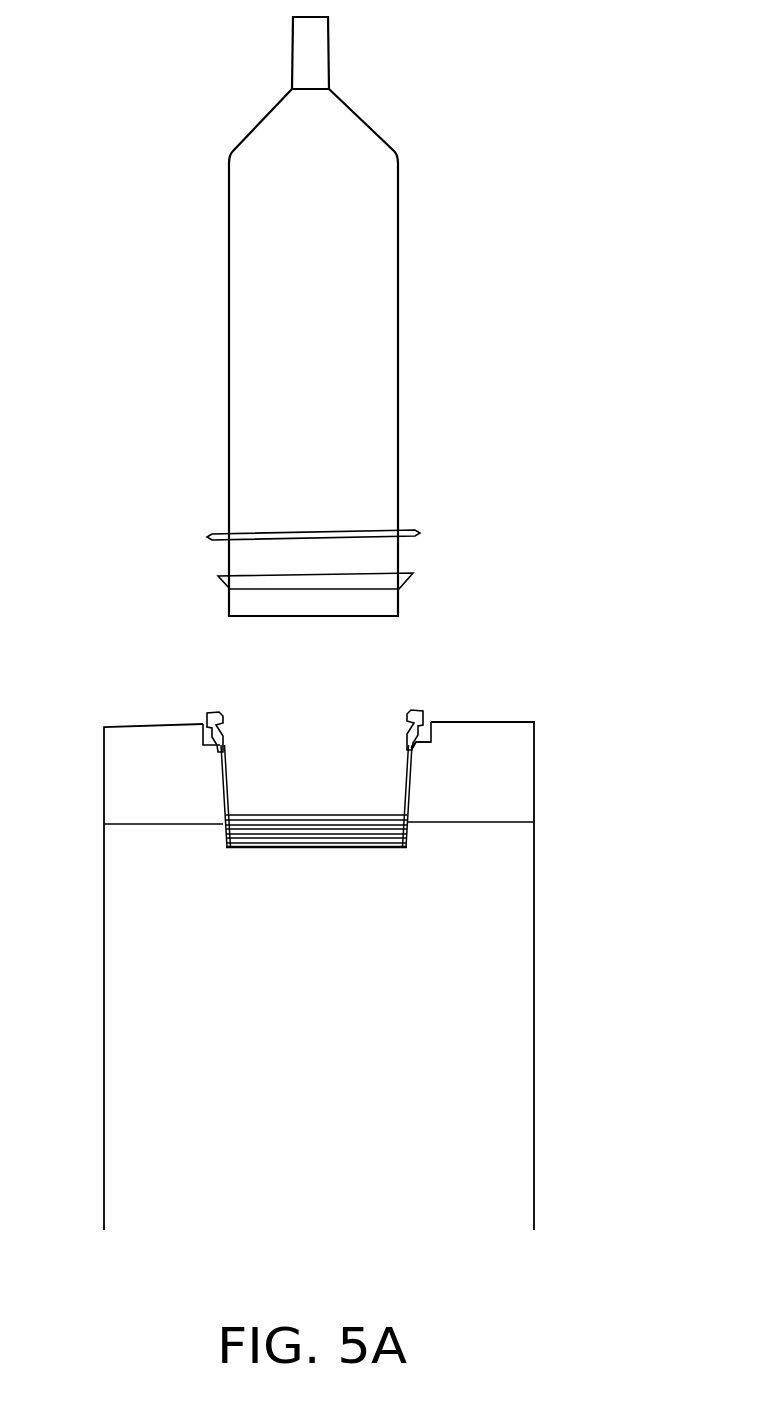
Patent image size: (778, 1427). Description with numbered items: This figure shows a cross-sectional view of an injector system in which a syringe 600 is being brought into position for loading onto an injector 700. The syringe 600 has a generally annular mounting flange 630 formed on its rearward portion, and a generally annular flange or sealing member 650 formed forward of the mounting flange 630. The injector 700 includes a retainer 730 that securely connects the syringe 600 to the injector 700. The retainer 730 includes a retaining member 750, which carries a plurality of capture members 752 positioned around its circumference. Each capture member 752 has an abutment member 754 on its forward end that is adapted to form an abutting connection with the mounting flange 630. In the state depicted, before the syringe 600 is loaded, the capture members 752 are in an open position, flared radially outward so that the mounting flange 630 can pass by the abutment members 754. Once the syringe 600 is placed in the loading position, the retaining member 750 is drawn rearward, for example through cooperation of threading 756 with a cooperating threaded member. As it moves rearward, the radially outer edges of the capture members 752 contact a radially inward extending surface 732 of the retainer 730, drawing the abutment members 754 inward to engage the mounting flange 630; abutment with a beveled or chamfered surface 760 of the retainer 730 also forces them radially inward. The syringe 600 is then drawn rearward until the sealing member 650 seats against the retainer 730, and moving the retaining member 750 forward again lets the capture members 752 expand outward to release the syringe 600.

The syringe 600 is at (403, 330).
The sealing member 650 is at (418, 525).
The mounting flange 630 is at (413, 578).
The injector 700 is at (540, 1112).
The retainer 730 is at (534, 778).
The radially inward extending surface 732 is at (417, 750).
The abutment member 754 is at (208, 713).
The capture members 752 is at (223, 787).
The threading 756 is at (408, 828).
The retaining member 750 is at (218, 840).
The beveled or chamfered surface 760 is at (413, 758).